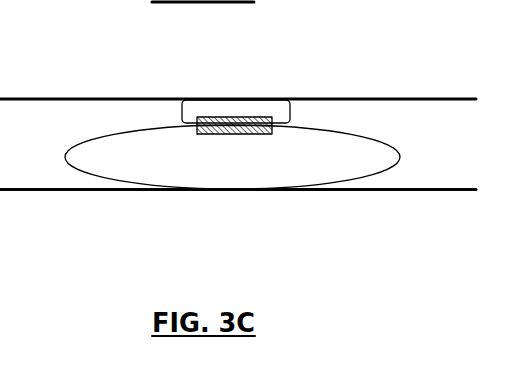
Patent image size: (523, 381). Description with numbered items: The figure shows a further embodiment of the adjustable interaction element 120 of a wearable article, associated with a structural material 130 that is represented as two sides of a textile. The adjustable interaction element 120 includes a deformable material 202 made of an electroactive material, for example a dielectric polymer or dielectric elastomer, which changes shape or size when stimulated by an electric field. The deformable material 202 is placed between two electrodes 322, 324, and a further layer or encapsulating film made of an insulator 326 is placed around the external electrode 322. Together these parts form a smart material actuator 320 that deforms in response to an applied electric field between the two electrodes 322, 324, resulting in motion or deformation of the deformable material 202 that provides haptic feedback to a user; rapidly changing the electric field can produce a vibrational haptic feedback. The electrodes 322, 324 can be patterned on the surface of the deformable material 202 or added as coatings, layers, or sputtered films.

The structural material 130 is at (437, 98).
The adjustable interaction element 120 is at (105, 134).
The smart material actuator 320 is at (262, 99).
The external electrode 322 is at (266, 121).
The electrode 324 is at (263, 134).
The insulator 326 is at (205, 108).
The deformable material 202 is at (401, 160).